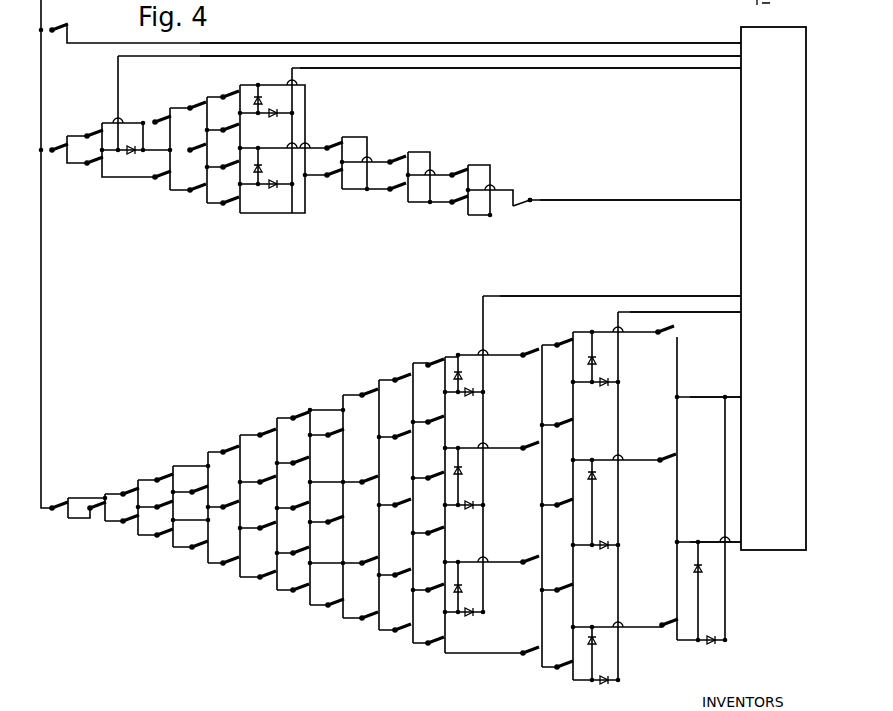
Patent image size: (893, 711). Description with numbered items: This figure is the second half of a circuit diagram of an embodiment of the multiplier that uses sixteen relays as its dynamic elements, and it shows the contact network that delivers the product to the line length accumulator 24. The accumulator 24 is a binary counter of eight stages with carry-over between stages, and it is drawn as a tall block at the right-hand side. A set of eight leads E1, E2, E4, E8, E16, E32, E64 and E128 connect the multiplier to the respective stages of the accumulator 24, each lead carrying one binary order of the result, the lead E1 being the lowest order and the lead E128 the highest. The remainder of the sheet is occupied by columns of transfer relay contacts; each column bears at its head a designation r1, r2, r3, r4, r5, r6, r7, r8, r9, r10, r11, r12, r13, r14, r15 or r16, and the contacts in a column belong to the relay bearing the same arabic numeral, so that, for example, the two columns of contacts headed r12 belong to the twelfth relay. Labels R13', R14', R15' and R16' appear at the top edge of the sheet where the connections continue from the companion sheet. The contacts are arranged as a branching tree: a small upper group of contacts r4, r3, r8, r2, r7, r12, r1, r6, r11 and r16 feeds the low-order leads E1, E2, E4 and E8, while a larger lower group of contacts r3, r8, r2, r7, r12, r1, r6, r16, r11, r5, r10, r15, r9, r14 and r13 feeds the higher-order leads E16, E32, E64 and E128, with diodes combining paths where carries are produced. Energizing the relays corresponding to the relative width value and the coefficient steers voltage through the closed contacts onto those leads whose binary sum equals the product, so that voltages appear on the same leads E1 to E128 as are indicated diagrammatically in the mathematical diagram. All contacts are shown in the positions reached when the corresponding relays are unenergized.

The transfer relay contacts r1 is at (281, 346).
The transfer relay contacts r2 is at (145, 312).
The transfer relay contacts r3 is at (60, 321).
The transfer relay contacts r4 is at (58, 20).
The transfer relay contacts r5 is at (368, 493).
The transfer relay contacts r6 is at (331, 361).
The transfer relay contacts r7 is at (180, 312).
The transfer relay contacts r8 is at (97, 315).
The transfer relay contacts r9 is at (533, 497).
The transfer relay contacts r10 is at (406, 491).
The transfer relay contacts r11 is at (399, 382).
The transfer relay contacts r12 is at (216, 311).
The transfer relay contacts r13 is at (662, 470).
The transfer relay contacts r14 is at (562, 495).
The transfer relay contacts r15 is at (440, 492).
The transfer relay contacts r16 is at (416, 386).
The lead E1 is at (673, 38).
The lead E2 is at (720, 49).
The lead E4 is at (719, 62).
The lead E8 is at (722, 197).
The lead E16 is at (725, 299).
The lead E32 is at (731, 308).
The lead E64 is at (735, 401).
The lead E128 is at (737, 542).
The line length accumulator 24 is at (796, 550).
The relay coil line R13' is at (356, 7).
The relay coil line R14' is at (410, 7).
The relay coil line R15' is at (463, 7).
The relay coil line R16' is at (511, 7).